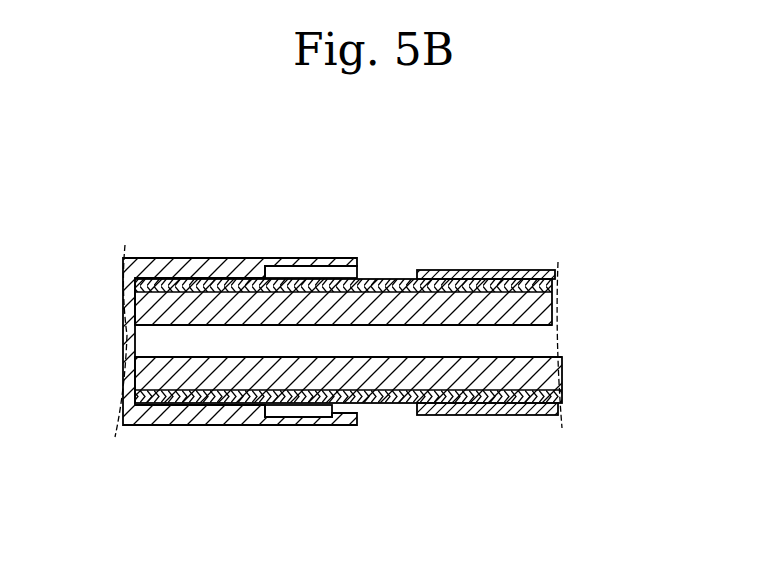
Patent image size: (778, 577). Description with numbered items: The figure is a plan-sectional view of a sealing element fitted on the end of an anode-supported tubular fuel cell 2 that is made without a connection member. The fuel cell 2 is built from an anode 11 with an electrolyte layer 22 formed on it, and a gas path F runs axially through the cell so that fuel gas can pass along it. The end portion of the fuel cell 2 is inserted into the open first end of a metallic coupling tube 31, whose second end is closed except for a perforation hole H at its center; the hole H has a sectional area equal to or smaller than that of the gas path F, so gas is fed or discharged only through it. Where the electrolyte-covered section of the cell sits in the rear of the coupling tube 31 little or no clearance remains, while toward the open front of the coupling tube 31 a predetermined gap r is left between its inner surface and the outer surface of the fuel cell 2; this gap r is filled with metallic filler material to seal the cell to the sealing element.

The coupling tube 31 is at (205, 427).
The gap r is at (313, 265).
The gas path F is at (325, 427).
The fuel cell 2 is at (535, 262).
The anode 11 is at (387, 398).
The electrolyte layer 22 is at (452, 270).
The perforation hole H is at (127, 340).